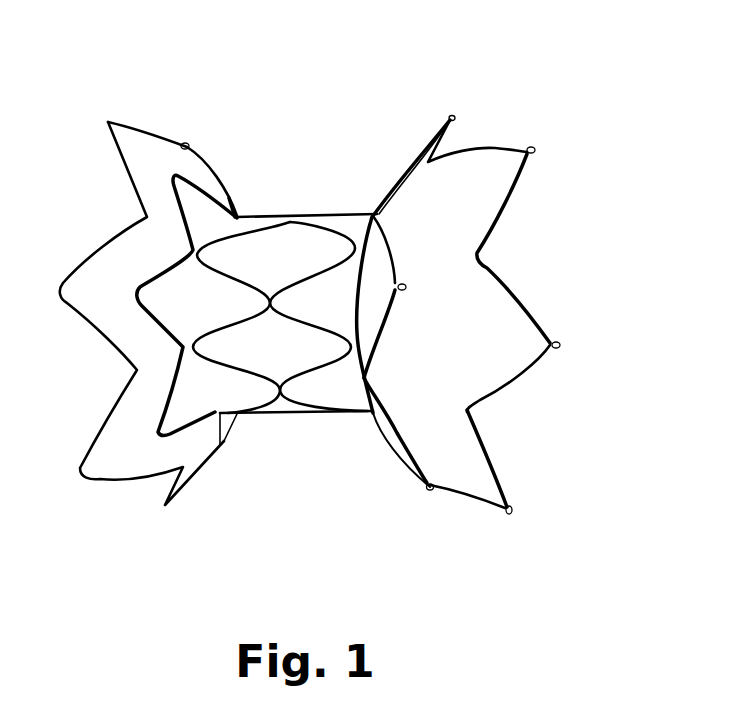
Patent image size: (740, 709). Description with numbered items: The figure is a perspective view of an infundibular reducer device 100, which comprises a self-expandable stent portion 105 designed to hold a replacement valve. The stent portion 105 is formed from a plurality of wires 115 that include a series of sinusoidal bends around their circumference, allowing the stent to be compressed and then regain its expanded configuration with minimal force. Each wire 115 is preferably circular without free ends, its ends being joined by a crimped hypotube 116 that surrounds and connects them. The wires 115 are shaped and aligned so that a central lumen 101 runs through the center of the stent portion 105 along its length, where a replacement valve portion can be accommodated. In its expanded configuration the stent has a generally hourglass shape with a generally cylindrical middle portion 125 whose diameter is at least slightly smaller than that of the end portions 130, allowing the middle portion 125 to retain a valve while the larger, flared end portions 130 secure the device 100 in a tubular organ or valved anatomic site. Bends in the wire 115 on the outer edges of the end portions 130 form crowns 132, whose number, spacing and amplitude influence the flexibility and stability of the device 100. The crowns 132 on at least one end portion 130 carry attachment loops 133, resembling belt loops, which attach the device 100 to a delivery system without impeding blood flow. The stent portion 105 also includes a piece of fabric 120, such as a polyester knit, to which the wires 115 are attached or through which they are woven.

The infundibular reducer device 100 is at (470, 77).
The central lumen 101 is at (402, 311).
The self-expandable stent portion 105 is at (329, 169).
The wires 115 is at (227, 440).
The crimped hypotube 116 is at (230, 317).
The fabric 120 is at (255, 248).
The middle portion 125 is at (192, 537).
The end portions 130 is at (45, 537).
The crowns 132 is at (527, 353).
The attachment loops 133 is at (457, 124).